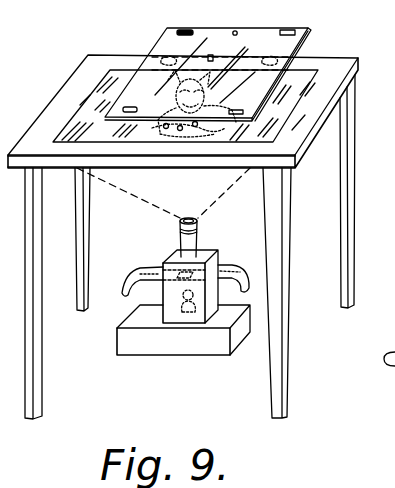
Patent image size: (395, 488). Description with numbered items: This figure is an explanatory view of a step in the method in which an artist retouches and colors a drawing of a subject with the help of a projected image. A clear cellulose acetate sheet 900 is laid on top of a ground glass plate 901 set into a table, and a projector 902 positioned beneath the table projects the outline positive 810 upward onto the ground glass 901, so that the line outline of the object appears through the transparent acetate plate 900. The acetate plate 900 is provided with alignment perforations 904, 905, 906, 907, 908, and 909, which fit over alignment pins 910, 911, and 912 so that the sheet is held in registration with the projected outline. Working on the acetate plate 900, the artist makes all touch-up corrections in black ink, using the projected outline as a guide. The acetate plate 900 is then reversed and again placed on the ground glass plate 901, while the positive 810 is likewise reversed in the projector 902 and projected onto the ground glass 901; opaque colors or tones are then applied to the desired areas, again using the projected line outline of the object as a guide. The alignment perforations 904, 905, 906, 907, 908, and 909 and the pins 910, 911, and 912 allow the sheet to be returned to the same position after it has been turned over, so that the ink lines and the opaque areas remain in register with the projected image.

The outline positive 810 is at (184, 259).
The clear cellulose acetate sheet 900 is at (138, 82).
The ground glass plate 901 is at (285, 85).
The projector 902 is at (125, 343).
The alignment perforation 904 is at (182, 30).
The alignment perforation 905 is at (236, 31).
The alignment perforation 906 is at (289, 30).
The alignment perforation 907 is at (125, 108).
The alignment perforation 908 is at (185, 102).
The alignment perforation 909 is at (240, 112).
The alignment pin 910 is at (165, 57).
The alignment pin 911 is at (152, 27).
The alignment pin 912 is at (272, 62).